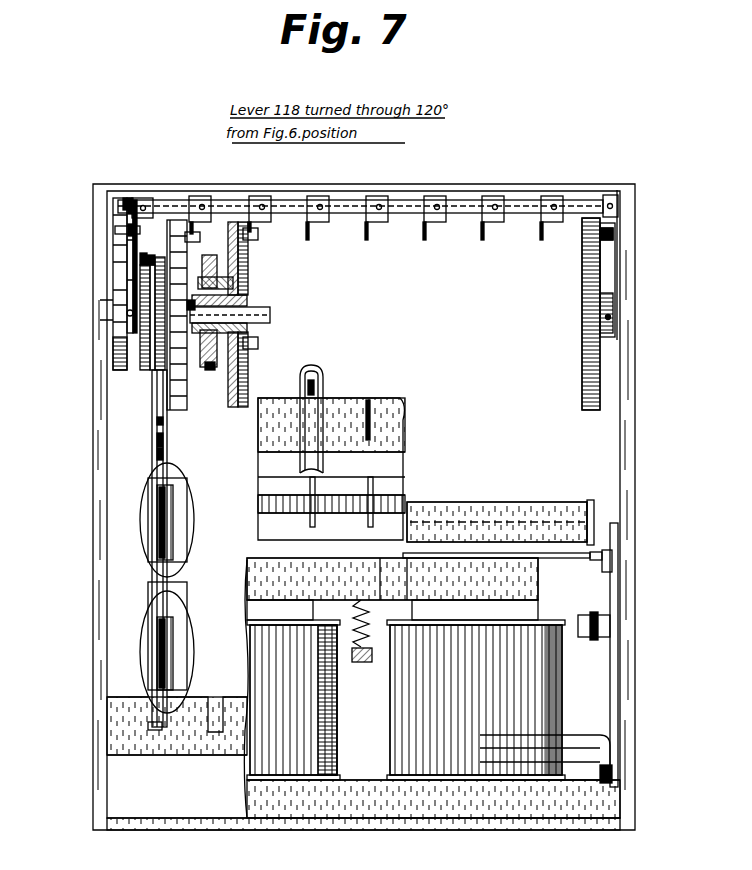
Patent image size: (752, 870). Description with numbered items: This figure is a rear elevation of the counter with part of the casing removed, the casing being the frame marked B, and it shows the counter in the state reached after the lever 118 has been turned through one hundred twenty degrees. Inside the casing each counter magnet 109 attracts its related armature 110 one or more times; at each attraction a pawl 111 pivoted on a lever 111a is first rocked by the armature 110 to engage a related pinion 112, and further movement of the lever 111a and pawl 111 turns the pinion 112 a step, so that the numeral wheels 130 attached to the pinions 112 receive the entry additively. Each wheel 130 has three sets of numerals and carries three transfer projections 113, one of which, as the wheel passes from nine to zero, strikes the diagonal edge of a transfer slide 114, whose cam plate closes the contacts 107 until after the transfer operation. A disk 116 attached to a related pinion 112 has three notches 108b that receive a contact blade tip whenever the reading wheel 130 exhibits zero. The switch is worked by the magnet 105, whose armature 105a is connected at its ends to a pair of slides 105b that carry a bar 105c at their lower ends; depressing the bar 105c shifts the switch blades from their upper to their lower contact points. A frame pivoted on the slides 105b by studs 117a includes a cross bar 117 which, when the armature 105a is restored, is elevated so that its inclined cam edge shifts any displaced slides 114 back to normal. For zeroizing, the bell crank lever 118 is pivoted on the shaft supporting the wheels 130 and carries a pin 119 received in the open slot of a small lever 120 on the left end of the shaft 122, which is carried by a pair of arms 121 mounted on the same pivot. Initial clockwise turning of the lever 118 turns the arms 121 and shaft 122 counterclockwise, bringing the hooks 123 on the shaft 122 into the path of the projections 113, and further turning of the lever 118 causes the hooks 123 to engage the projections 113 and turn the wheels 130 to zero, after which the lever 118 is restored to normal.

The frame B is at (88, 565).
The magnet 105 is at (318, 713).
The armature 105a is at (507, 569).
The slides 105b is at (613, 662).
The bar 105c is at (590, 737).
The contacts 107 is at (327, 385).
The notches 108b is at (140, 355).
The counter magnet 109 is at (163, 480).
The armature 110 is at (155, 428).
The pawl 111 is at (162, 420).
The lever 111a is at (158, 448).
The pinion 112 is at (157, 353).
The transfer projections 113 is at (258, 236).
The transfer slide 114 is at (368, 517).
The disk 116 is at (205, 259).
The cross bar 117 is at (468, 505).
The studs 117a is at (585, 622).
The lever 118 is at (113, 278).
The pin 119 is at (117, 229).
The small lever 120 is at (142, 202).
The arms 121 is at (130, 207).
The shaft 122 is at (463, 207).
The hooks 123 is at (200, 200).
The numeral wheels 130 is at (232, 405).